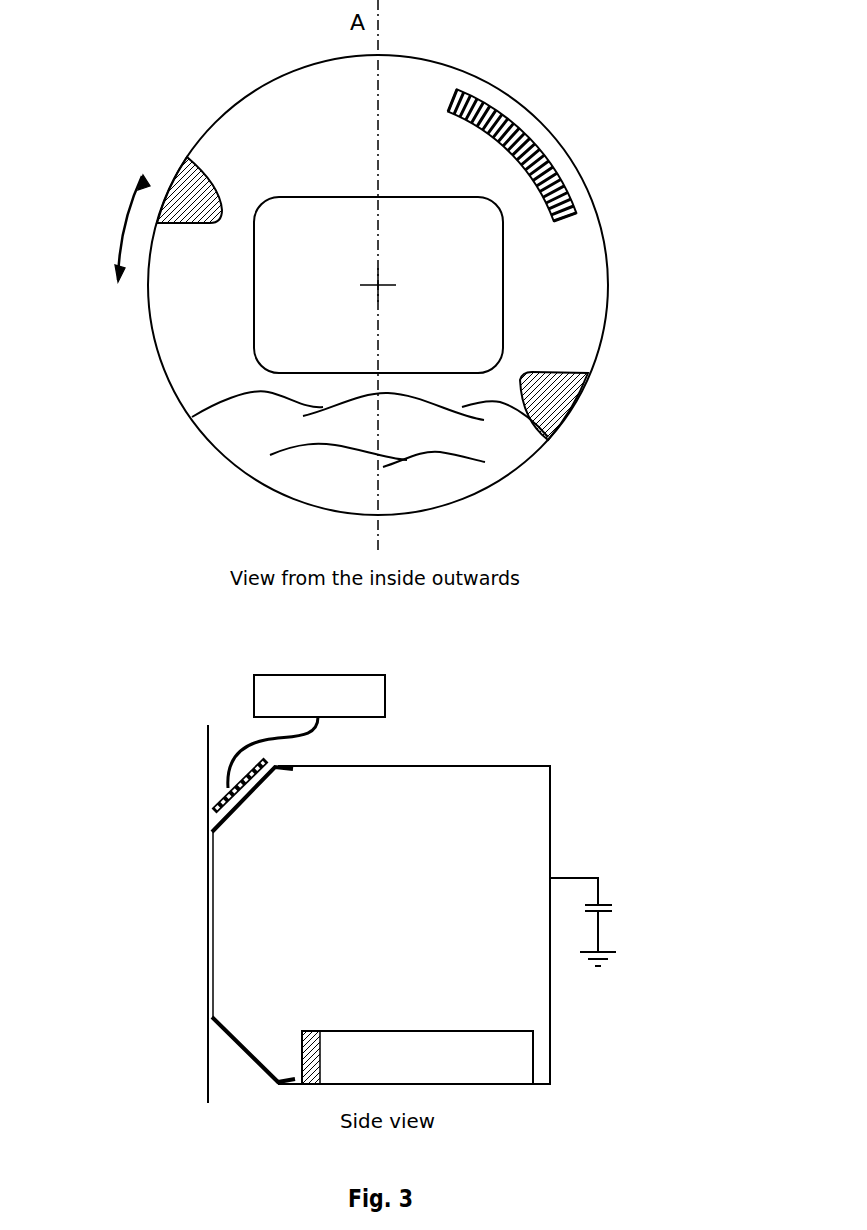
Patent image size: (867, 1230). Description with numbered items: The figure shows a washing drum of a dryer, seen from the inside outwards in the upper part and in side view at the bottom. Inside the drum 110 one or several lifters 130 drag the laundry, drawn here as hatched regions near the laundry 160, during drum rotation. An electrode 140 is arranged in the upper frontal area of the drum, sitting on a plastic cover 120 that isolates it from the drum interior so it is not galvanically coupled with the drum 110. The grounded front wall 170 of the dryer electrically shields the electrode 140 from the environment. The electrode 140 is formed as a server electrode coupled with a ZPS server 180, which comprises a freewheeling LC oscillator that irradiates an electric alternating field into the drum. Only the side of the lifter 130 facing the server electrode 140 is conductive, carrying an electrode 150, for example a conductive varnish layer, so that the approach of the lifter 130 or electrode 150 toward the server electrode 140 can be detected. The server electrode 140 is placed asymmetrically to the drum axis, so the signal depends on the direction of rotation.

The drum 110 is at (389, 569).
The plastic cover 120 is at (398, 661).
The lifter 130 is at (374, 619).
The electrode 140 is at (387, 450).
The electrode 150 is at (340, 1008).
The clouds / waves 160 is at (366, 457).
The front wall 170 is at (168, 940).
The ZPS server 180 is at (344, 730).